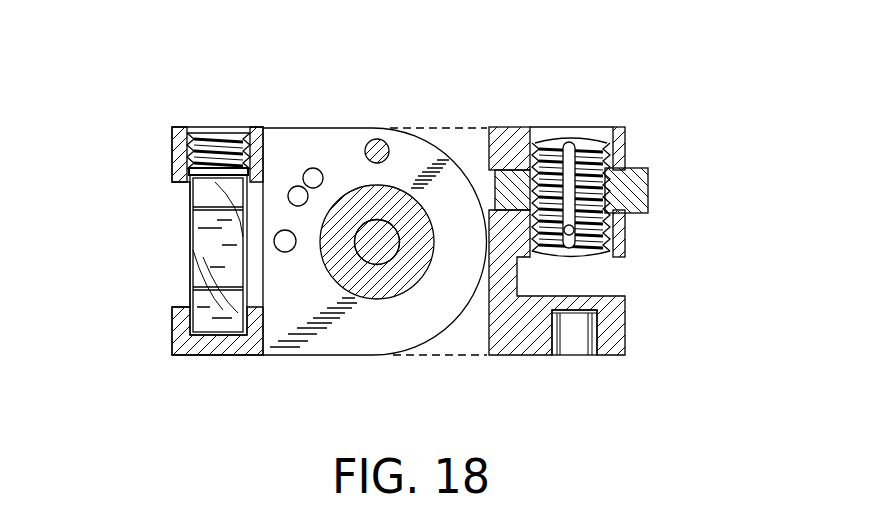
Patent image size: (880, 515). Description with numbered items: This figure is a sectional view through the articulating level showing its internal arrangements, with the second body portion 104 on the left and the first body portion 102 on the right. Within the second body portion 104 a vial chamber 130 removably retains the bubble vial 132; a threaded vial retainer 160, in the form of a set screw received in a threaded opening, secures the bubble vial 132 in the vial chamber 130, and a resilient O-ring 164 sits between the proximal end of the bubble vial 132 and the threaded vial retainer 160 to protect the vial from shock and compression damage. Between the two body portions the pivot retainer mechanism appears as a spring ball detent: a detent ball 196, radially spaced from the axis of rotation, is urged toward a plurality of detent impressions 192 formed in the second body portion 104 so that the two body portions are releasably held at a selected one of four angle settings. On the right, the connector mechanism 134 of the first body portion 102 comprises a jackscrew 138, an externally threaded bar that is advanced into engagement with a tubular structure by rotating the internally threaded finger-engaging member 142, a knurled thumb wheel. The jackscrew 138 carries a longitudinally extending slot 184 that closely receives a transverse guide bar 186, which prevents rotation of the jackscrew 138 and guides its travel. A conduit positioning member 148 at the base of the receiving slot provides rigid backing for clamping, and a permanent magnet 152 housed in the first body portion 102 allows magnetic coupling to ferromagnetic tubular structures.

The first body portion 102 is at (664, 106).
The second body portion 104 is at (145, 96).
The vial chamber 130 is at (210, 338).
The bubble vial 132 is at (190, 237).
The connector mechanism 134 is at (680, 165).
The jackscrew 138 is at (560, 140).
The finger-engaging member 142 is at (650, 201).
The conduit positioning member 148 is at (625, 333).
The permanent magnet 152 is at (573, 355).
The threaded vial retainer 160 is at (218, 127).
The resilient O-ring 164 is at (246, 186).
The slot 184 is at (577, 136).
The guide bar 186 is at (575, 231).
The detent impressions 192 is at (286, 230).
The detent ball 196 is at (372, 139).